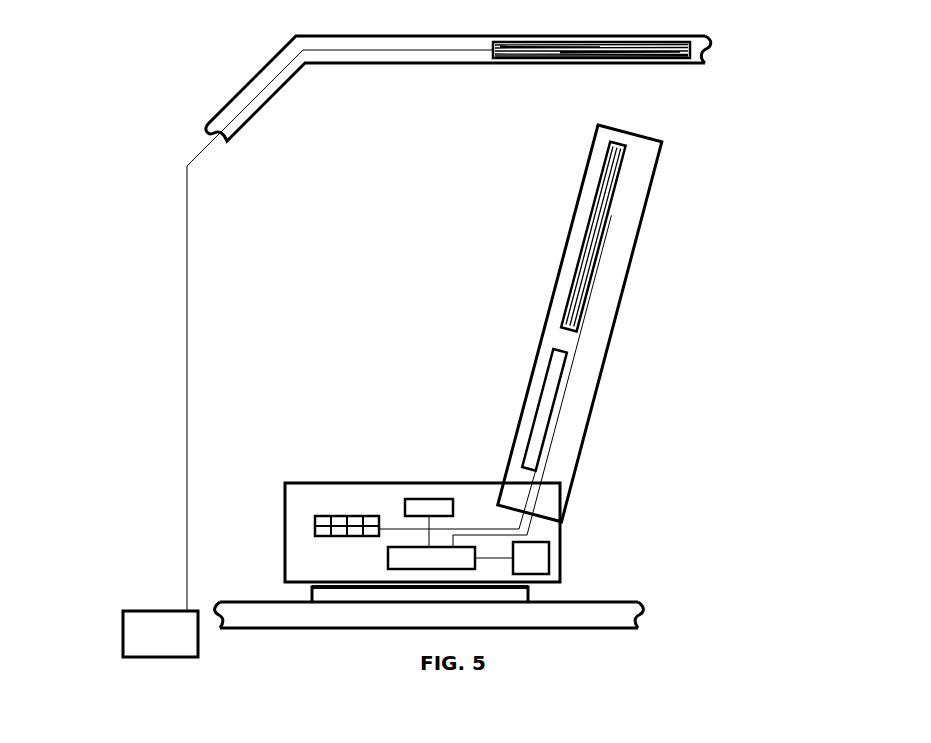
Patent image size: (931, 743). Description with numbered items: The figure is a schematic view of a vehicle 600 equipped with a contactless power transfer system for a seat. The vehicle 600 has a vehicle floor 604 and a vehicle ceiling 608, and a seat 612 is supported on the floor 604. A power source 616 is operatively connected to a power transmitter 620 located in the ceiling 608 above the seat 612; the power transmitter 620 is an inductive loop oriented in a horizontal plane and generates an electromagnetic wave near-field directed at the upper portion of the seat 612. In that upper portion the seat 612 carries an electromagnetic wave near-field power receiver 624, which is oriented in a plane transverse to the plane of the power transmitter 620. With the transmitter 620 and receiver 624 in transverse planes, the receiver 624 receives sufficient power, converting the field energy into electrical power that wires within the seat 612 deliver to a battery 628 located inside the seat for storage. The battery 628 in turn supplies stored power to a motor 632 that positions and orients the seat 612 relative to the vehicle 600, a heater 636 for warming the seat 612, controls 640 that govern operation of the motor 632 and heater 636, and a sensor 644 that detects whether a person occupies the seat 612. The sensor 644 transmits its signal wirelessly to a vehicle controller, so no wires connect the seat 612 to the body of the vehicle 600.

The vehicle 600 is at (178, 92).
The vehicle floor 604 is at (577, 615).
The vehicle ceiling 608 is at (398, 66).
The seat 612 is at (604, 490).
The power source 616 is at (150, 611).
The power transmitter 620 is at (543, 60).
The power receiver 624 is at (593, 208).
The battery 628 is at (390, 560).
The motor 632 is at (552, 553).
The heater 636 is at (538, 408).
The controls 640 is at (337, 516).
The sensor 644 is at (432, 498).